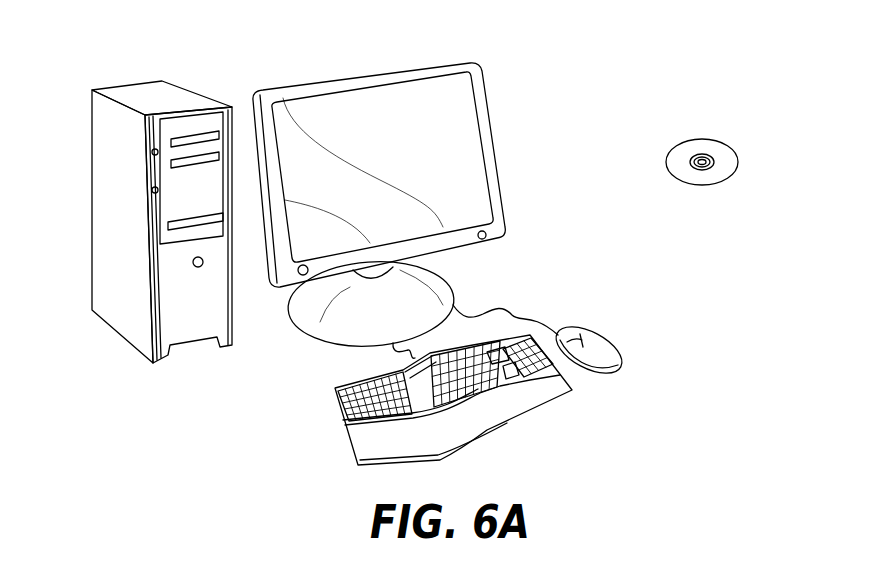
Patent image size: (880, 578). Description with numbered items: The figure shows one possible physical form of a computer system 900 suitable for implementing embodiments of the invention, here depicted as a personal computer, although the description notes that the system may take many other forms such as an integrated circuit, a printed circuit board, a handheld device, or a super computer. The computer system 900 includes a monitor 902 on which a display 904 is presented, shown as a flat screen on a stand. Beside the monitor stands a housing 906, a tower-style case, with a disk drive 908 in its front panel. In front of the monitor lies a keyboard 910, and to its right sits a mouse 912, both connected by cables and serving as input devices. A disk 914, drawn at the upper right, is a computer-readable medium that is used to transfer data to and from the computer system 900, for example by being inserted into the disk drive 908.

The computer system 900 is at (630, 39).
The monitor 902 is at (498, 172).
The display 904 is at (452, 103).
The housing 906 is at (147, 88).
The disk drive 908 is at (210, 217).
The keyboard 910 is at (347, 433).
The mouse 912 is at (610, 343).
The disk 914 is at (718, 138).